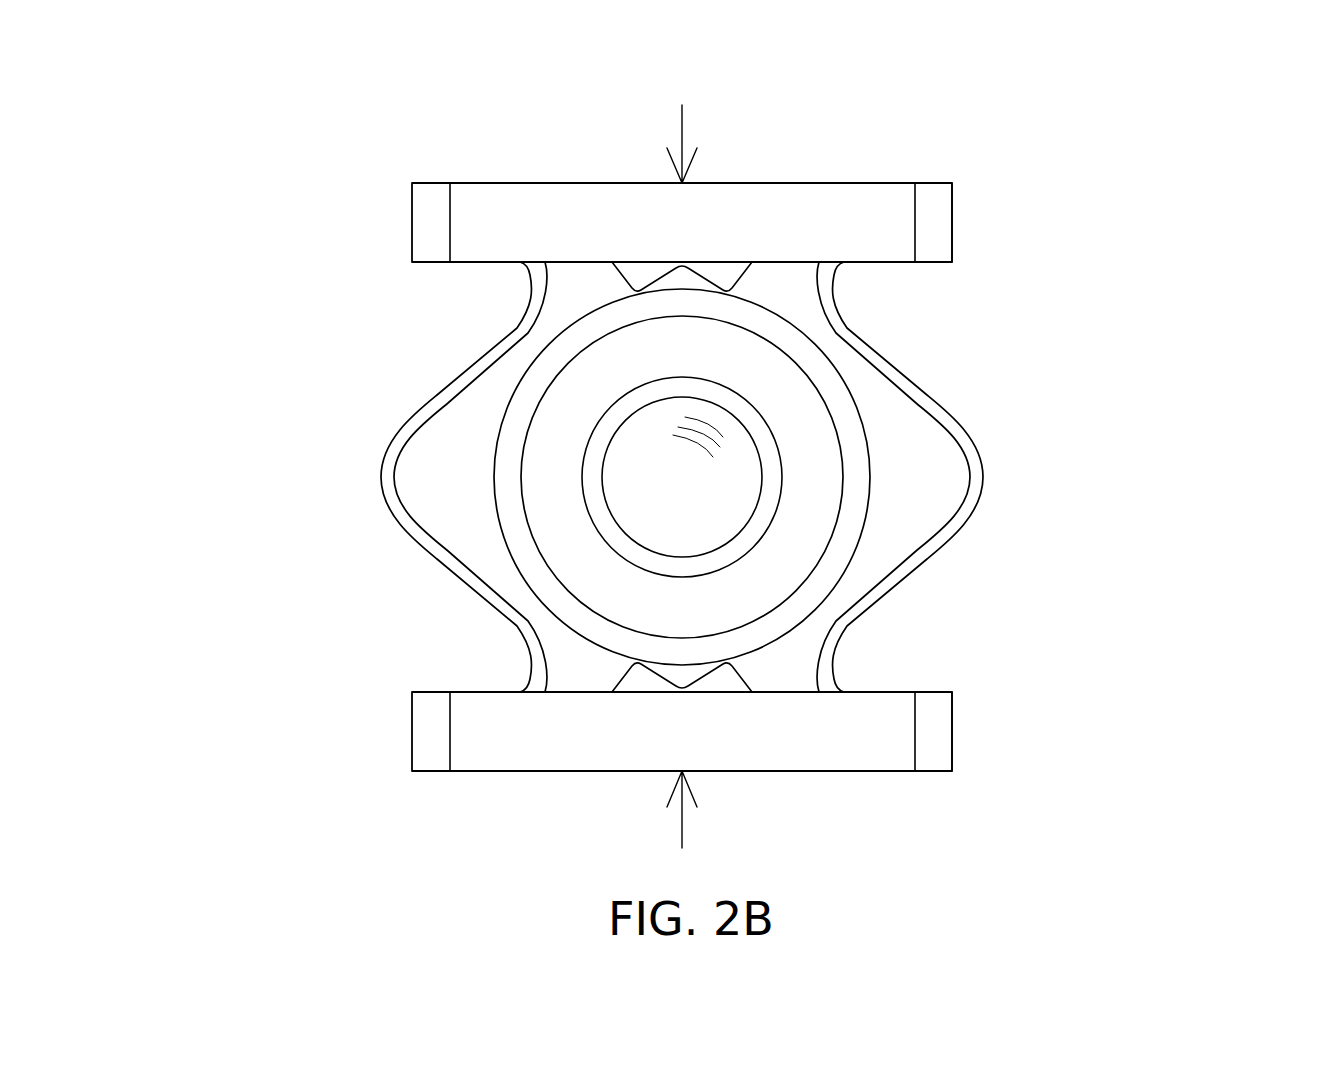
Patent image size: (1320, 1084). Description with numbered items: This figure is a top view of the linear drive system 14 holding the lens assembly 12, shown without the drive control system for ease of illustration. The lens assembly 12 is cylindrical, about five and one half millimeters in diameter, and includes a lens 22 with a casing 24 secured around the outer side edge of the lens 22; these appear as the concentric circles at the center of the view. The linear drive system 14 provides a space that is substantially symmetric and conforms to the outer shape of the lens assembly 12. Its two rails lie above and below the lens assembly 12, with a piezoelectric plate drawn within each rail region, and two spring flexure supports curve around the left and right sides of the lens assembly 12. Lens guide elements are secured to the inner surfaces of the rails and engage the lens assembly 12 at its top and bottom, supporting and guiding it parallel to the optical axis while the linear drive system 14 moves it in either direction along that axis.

The lens assembly 12 is at (723, 501).
The linear drive system 14 is at (698, 477).
The lens 22 is at (662, 508).
The casing 24 is at (583, 568).